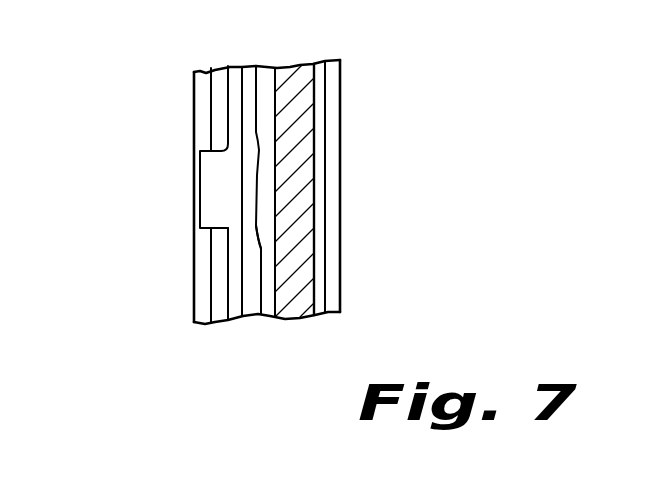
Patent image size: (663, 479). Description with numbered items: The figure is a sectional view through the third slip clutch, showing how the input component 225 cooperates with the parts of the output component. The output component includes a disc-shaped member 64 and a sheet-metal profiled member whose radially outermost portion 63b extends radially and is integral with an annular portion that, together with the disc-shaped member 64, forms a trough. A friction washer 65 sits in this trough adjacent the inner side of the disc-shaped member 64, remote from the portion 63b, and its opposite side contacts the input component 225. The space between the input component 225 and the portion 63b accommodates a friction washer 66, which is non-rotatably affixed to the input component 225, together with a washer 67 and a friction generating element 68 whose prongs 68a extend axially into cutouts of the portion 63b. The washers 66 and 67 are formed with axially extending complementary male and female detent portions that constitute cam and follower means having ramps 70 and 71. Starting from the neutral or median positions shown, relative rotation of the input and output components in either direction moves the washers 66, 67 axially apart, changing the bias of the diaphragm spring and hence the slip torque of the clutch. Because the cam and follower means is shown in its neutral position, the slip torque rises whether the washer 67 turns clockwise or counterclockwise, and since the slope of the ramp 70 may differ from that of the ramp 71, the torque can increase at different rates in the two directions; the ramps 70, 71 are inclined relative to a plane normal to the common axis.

The radially outermost portion 63b is at (205, 269).
The disc-shaped member 64 is at (340, 252).
The friction washer 65 is at (317, 147).
The friction washer 66 is at (268, 302).
The washer 67 is at (252, 303).
The friction generating element 68 is at (223, 107).
The prongs 68a is at (210, 214).
The ramp 70 is at (252, 145).
The ramp 71 is at (257, 238).
The input component 225 is at (297, 98).